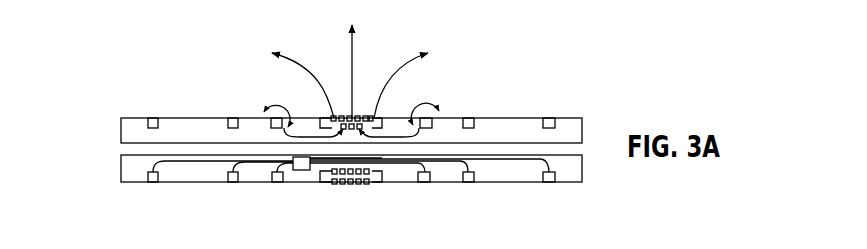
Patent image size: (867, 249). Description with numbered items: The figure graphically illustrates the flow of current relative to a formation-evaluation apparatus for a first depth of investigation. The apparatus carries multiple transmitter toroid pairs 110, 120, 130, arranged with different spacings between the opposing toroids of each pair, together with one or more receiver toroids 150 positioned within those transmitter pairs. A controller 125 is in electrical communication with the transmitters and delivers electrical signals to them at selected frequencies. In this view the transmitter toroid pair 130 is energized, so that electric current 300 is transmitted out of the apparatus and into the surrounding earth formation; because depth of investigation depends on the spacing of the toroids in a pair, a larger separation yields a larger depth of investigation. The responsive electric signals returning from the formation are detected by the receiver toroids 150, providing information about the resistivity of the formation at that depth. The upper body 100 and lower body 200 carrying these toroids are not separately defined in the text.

The first substrate 100 is at (121, 130).
The first electrode pad 110 is at (153, 182).
The second electrode pad 120 is at (233, 182).
The control chip 125 is at (300, 171).
The third electrode pad 130 is at (277, 182).
The light emitting element 150 is at (366, 116).
The second substrate 200 is at (308, 248).
The emission direction 300 is at (353, 45).